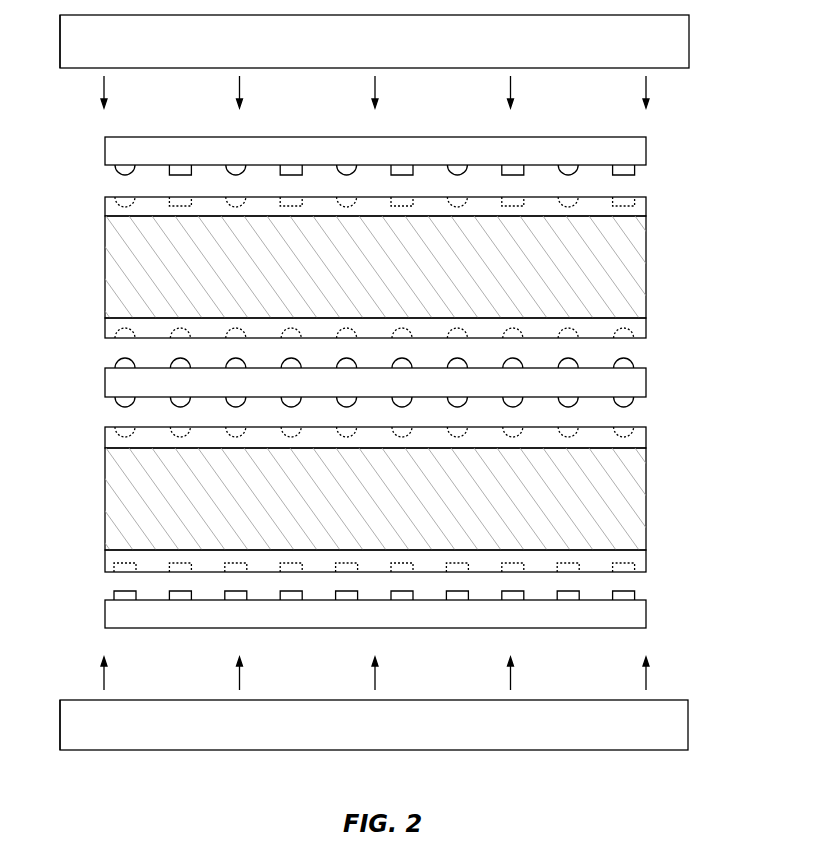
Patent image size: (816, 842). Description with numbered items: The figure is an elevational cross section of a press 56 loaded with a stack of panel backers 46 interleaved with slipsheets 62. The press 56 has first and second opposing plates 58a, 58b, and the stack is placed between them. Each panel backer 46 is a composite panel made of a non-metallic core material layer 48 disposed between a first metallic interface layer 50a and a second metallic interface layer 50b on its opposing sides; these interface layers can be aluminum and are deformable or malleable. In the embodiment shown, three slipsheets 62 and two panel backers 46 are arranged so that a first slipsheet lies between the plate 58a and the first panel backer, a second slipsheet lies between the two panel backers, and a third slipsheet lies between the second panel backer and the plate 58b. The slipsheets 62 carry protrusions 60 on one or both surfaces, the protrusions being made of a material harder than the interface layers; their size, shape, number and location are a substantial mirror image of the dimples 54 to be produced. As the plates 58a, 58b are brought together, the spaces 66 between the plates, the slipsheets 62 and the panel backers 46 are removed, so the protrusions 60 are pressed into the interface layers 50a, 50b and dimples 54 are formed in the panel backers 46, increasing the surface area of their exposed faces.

The panel backer 46 is at (357, 385).
The non-metallic core material layer 48 is at (386, 277).
The first metallic interface layer 50a is at (645, 204).
The second metallic interface layer 50b is at (637, 330).
The dimples 54 is at (122, 200).
The press 56 is at (386, 51).
The first plate 58a is at (683, 45).
The second plate 58b is at (683, 721).
The protrusions 60 is at (628, 172).
The slipsheets 62 is at (386, 162).
The spaces 66 is at (57, 68).